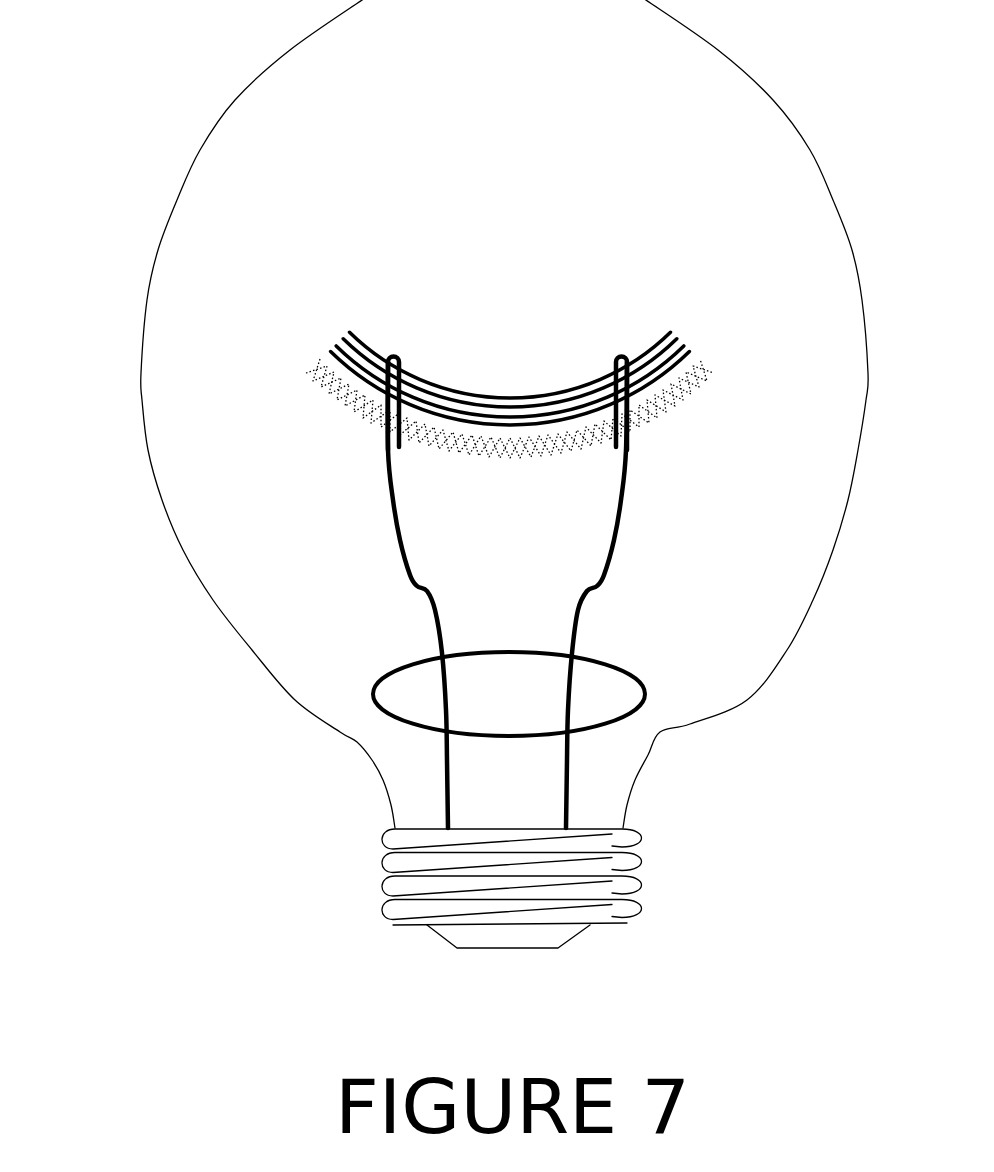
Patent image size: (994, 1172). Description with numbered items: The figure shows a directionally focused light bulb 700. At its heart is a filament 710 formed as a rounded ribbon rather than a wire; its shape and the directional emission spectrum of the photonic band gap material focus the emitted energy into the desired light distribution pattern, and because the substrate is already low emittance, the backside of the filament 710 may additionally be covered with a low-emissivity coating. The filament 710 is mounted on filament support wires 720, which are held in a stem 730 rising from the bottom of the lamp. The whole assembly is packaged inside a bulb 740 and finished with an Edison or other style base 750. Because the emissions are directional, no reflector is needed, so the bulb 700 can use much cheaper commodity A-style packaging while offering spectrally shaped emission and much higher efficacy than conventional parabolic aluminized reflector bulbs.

The directionally focused light bulb 700 is at (763, 943).
The filament 710 is at (483, 388).
The filament support wires 720 is at (395, 524).
The stem 730 is at (378, 688).
The bulb 740 is at (142, 377).
The base 750 is at (373, 828).